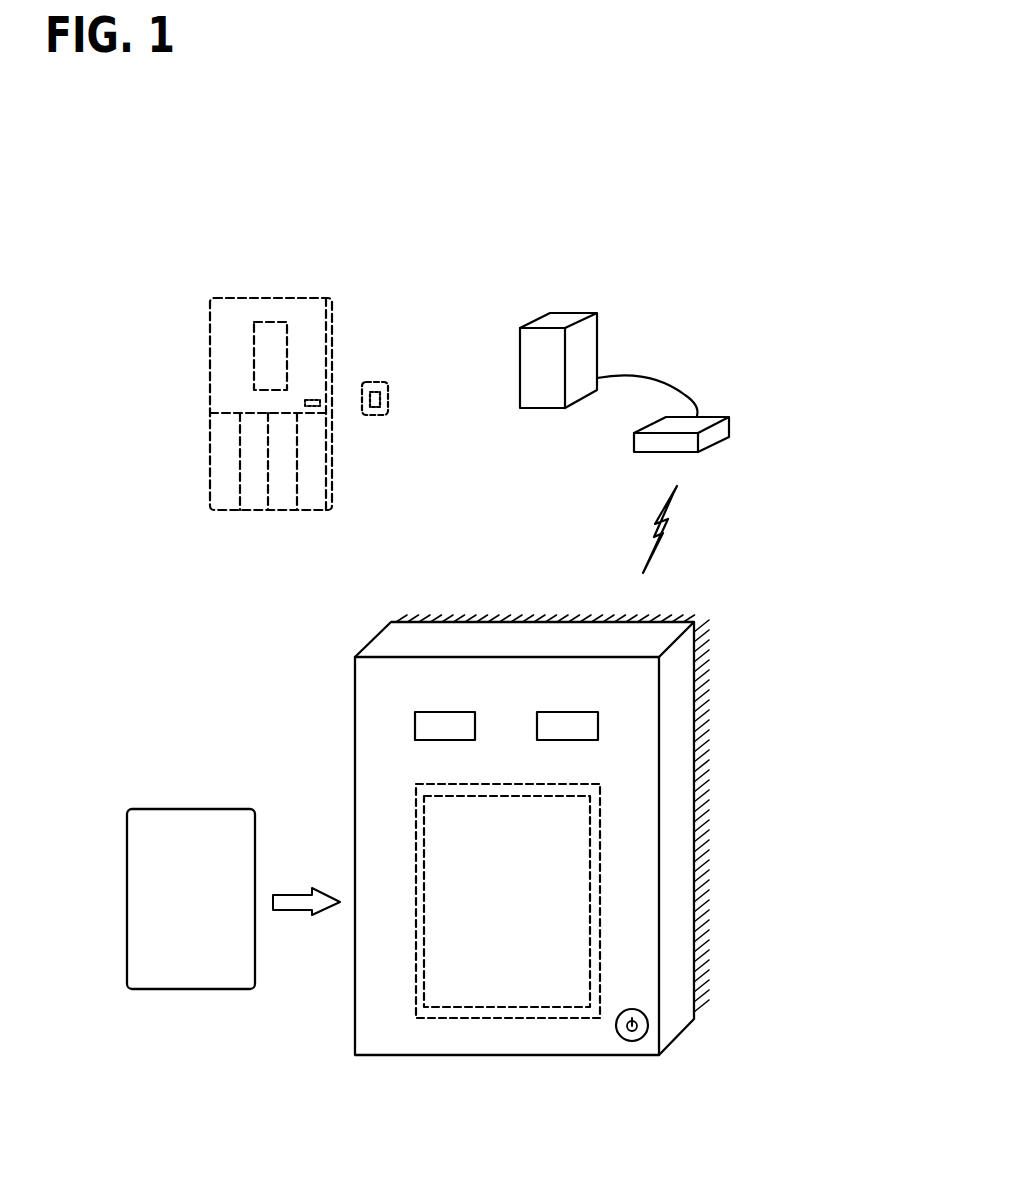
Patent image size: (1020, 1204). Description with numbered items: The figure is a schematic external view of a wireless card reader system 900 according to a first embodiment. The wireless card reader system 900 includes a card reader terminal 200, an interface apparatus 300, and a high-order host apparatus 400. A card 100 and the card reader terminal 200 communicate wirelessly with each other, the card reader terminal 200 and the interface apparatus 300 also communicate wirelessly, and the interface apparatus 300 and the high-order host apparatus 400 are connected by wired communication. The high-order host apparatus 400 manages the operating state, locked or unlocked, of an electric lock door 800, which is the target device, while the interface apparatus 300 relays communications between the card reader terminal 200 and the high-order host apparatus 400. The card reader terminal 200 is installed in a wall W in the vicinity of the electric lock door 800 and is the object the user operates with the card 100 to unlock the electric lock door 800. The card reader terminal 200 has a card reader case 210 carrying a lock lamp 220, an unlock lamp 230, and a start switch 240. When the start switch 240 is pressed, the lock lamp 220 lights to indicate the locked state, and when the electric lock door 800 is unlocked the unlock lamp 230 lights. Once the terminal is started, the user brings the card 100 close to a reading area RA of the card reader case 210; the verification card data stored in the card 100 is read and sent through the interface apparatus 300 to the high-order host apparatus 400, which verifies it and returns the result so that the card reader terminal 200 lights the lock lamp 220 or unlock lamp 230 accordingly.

The card 100 is at (193, 809).
The card reader terminal 200 is at (390, 384).
The card reader case 210 is at (373, 637).
The lock lamp 220 is at (445, 712).
The unlock lamp 230 is at (569, 712).
The start switch 240 is at (615, 1030).
The interface apparatus 300 is at (730, 425).
The high-order host apparatus 400 is at (598, 356).
The electric lock door 800 is at (333, 352).
The wireless card reader system 900 is at (747, 357).
The reading area RA is at (588, 890).
The wall W is at (755, 687).